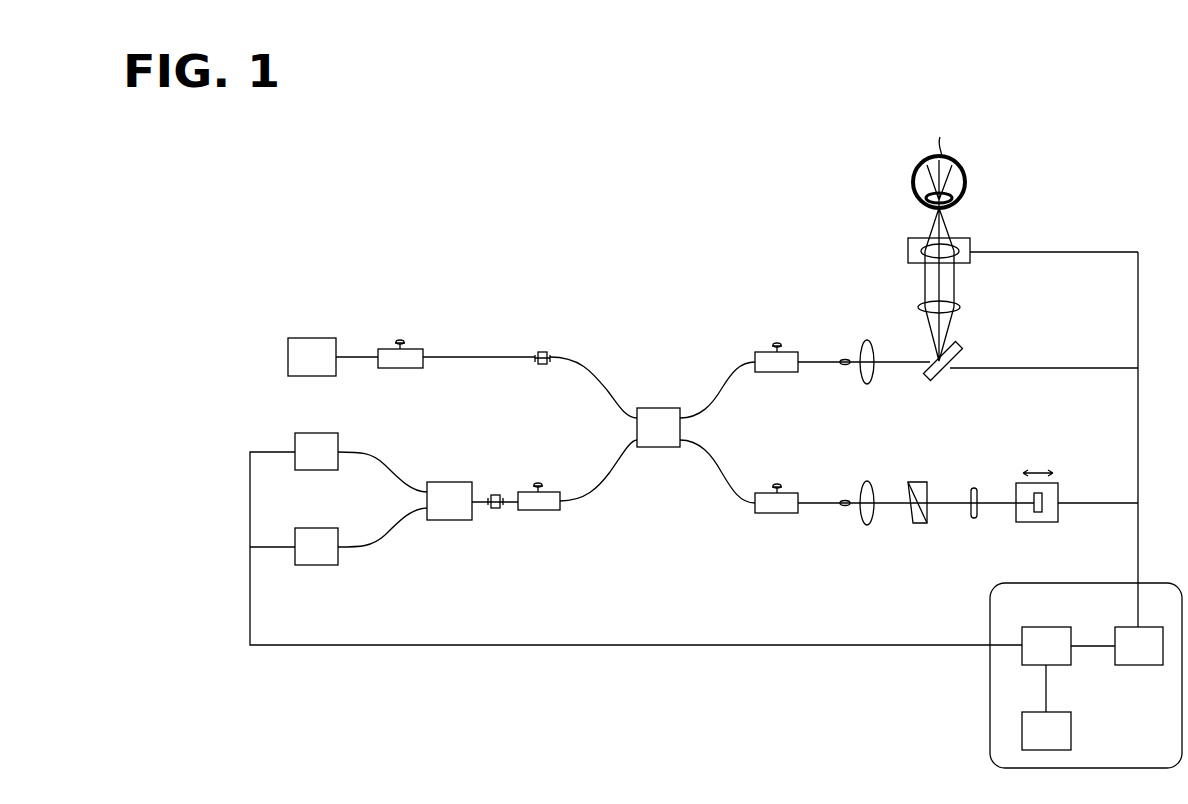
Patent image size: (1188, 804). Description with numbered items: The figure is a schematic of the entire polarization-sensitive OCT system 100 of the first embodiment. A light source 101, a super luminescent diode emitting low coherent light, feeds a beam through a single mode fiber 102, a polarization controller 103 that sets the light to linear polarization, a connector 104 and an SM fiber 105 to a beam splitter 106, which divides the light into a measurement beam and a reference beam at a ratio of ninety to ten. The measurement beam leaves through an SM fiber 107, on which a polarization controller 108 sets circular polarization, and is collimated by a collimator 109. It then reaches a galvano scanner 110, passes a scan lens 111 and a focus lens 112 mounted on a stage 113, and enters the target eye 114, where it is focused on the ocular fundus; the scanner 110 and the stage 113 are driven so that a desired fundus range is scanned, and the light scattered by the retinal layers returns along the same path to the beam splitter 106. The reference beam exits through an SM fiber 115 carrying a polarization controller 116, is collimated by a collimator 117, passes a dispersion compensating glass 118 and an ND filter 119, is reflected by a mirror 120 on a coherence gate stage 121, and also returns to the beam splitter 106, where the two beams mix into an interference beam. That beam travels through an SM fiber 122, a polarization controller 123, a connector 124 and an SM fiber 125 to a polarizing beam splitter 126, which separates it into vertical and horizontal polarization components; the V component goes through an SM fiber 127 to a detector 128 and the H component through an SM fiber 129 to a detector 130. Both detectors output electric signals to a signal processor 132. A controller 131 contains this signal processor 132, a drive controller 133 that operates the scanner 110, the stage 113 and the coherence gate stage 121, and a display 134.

The optical coherence tomography apparatus 100 is at (341, 254).
The light source 101 is at (325, 338).
The single mode fiber 102 is at (358, 357).
The polarization controller 103 is at (420, 349).
The connector 104 is at (544, 352).
The SM fiber 105 is at (600, 368).
The beam splitter 106 is at (659, 408).
The SM fiber 107 is at (722, 370).
The polarization controller 108 is at (766, 352).
The collimator 109 is at (862, 342).
The galvano scanner 110 is at (958, 350).
The scan lens 111 is at (960, 306).
The focus lens 112 is at (920, 249).
The stage 113 is at (968, 240).
The target eye 114 is at (966, 172).
The SM fiber 115 is at (718, 470).
The polarization controller 116 is at (768, 513).
The collimator 117 is at (868, 525).
The dispersion compensating glass 118 is at (920, 523).
The ND filter 119 is at (974, 518).
The mirror 120 is at (1037, 522).
The coherence gate stage 121 is at (1058, 512).
The SM fiber 122 is at (600, 470).
The polarization controller 123 is at (545, 510).
The connector 124 is at (496, 510).
The SM fiber 125 is at (480, 500).
The polarizing beam splitter 126 is at (452, 520).
The SM fiber 127 is at (368, 458).
The detector 128 is at (337, 433).
The SM fiber 129 is at (372, 548).
The detector 130 is at (320, 565).
The controller 131 is at (990, 718).
The signal processor 132 is at (1045, 627).
The drive controller 133 is at (1120, 627).
The display 134 is at (1071, 730).